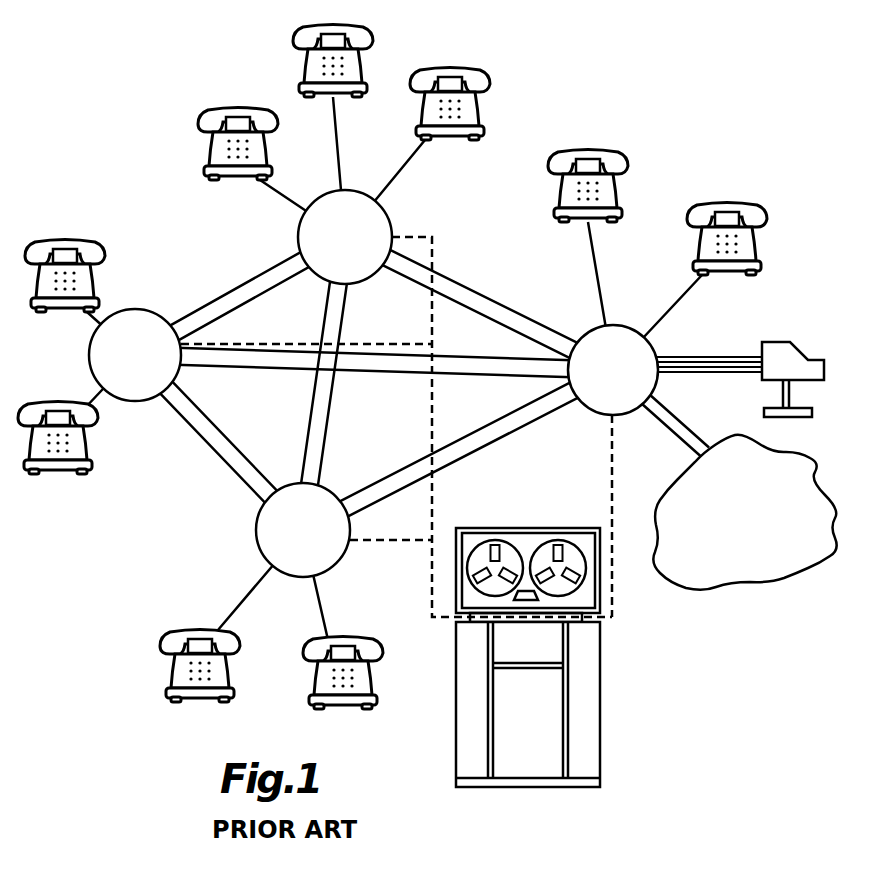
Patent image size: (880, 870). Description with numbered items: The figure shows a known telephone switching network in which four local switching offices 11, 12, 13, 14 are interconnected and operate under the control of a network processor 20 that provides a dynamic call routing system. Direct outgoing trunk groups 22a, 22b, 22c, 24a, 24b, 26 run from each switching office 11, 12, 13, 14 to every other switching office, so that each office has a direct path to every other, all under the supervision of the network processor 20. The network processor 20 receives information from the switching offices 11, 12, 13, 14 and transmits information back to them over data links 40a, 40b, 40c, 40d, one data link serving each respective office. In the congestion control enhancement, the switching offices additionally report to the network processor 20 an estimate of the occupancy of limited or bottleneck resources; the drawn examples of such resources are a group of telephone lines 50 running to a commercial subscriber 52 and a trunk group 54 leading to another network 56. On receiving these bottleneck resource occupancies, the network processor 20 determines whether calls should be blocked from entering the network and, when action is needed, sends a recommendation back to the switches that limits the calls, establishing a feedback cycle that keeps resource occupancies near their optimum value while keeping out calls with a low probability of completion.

The local switching office 11 is at (388, 212).
The local switching office 12 is at (138, 309).
The local switching office 13 is at (256, 537).
The local switching office 14 is at (596, 416).
The network processor 20 is at (600, 730).
The direct outgoing trunk group 22a is at (273, 267).
The direct outgoing trunk group 22b is at (322, 318).
The direct outgoing trunk group 22c is at (512, 297).
The direct outgoing trunk group 24a is at (220, 464).
The direct outgoing trunk group 24b is at (410, 377).
The direct outgoing trunk group 26 is at (400, 463).
The data link 40a is at (432, 252).
The data link 40b is at (355, 342).
The data link 40c is at (364, 540).
The data link 40d is at (612, 478).
The group of telephone lines 50 is at (690, 354).
The commercial subscriber 52 is at (797, 341).
The trunk group 54 is at (698, 427).
The another network 56 is at (818, 466).